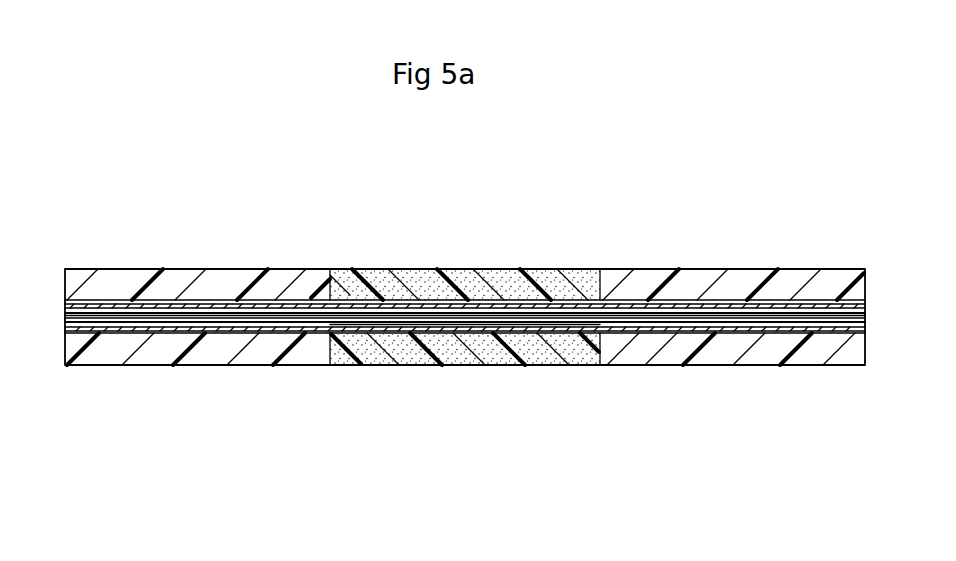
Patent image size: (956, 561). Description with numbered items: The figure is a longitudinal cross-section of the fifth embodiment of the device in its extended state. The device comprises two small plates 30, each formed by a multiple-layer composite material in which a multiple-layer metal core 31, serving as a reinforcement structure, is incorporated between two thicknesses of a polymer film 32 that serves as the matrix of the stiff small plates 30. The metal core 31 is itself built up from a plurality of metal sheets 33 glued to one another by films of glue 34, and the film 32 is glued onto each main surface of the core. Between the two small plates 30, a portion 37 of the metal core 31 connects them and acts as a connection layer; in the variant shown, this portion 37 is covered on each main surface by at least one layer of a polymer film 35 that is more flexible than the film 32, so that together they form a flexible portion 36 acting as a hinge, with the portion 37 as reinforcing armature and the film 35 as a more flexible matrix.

The small plate 30 is at (137, 259).
The metal core 31 is at (318, 318).
The polymer film 32 is at (186, 269).
The metal sheets 33 is at (668, 318).
The films of glue 34 is at (790, 306).
The flexible polymer film 35 is at (462, 352).
The flexible portion 36 is at (590, 232).
The portion of the metal core 37 is at (400, 318).